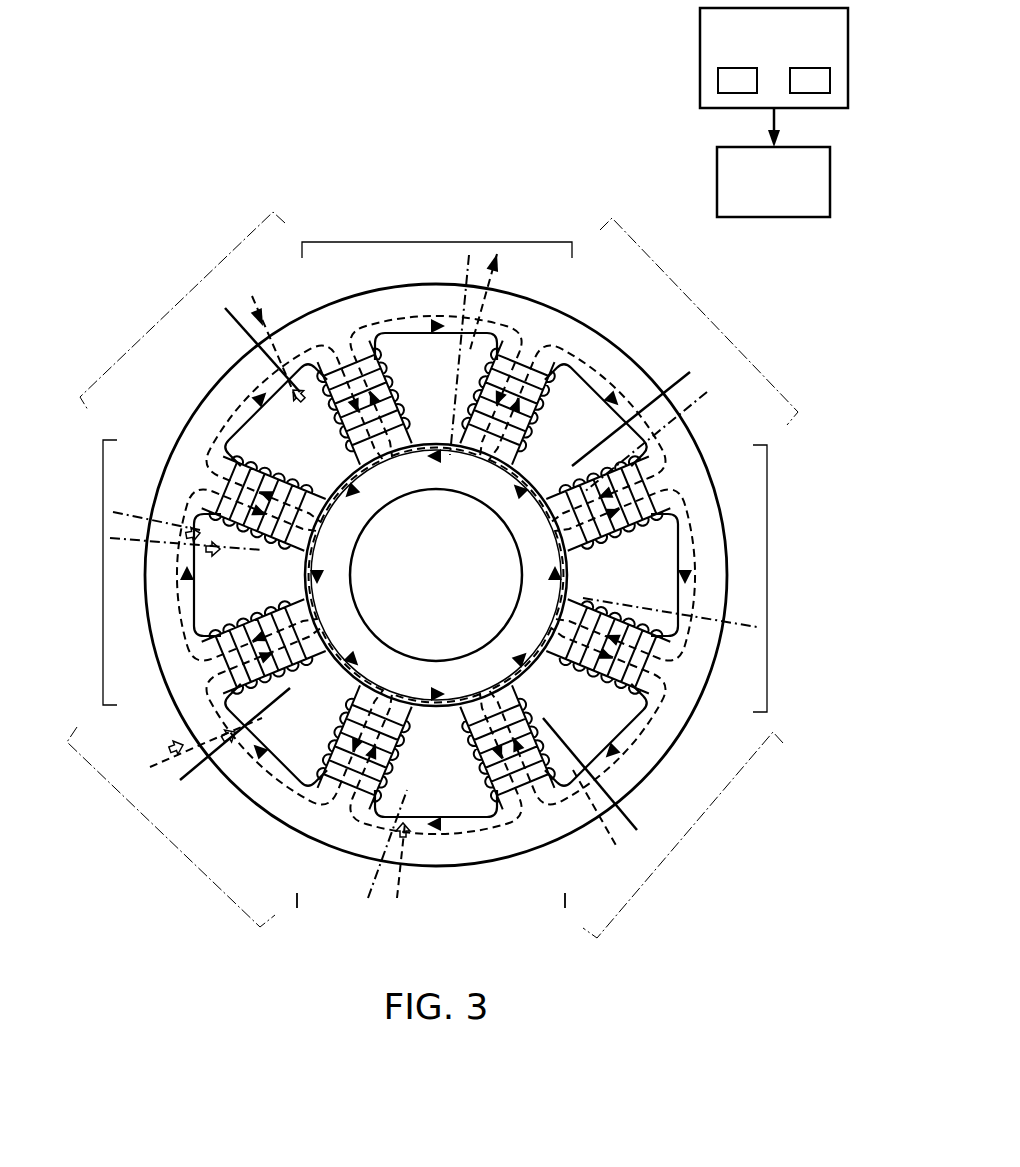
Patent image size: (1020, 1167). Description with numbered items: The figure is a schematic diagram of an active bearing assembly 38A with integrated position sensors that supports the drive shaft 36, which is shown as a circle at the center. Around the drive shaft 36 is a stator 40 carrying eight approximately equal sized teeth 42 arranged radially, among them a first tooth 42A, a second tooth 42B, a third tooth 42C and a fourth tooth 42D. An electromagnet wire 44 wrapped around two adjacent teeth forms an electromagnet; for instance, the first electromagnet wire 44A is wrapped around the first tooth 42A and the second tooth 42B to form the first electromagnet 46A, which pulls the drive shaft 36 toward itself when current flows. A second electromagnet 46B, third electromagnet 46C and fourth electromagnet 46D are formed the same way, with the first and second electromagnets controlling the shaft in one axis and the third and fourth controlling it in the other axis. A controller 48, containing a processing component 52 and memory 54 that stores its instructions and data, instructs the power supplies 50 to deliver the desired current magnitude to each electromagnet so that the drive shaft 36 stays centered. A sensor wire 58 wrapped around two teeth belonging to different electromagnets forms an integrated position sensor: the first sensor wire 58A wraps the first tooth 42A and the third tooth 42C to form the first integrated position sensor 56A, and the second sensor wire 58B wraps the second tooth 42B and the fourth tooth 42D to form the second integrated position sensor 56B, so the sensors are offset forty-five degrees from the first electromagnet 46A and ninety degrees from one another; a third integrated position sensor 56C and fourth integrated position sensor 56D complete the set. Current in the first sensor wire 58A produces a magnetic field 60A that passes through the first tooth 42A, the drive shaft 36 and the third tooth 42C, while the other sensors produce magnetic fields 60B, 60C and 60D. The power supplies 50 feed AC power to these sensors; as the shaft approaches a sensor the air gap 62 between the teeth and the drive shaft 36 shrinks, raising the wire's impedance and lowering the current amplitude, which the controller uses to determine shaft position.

The drive shaft 36 is at (540, 693).
The active bearing assembly 38A is at (178, 178).
The stator 40 is at (218, 377).
The teeth 42 is at (600, 560).
The first tooth 42A is at (270, 600).
The second tooth 42B is at (297, 480).
The third tooth 42C is at (337, 707).
The fourth tooth 42D is at (430, 418).
The electromagnet wire 44 is at (590, 808).
The first electromagnet wire 44A is at (220, 750).
The first electromagnet 46A is at (103, 575).
The second electromagnet 46B is at (767, 578).
The third electromagnet 46C is at (437, 242).
The fourth electromagnet 46D is at (437, 918).
The controller 48 is at (850, 55).
The power supplies 50 is at (832, 180).
The processing component 52 is at (718, 80).
The memory 54 is at (830, 82).
The first integrated position sensor 56A is at (162, 833).
The second integrated position sensor 56B is at (177, 302).
The third integrated position sensor 56C is at (690, 842).
The fourth integrated position sensor 56D is at (707, 317).
The sensor wire 58 is at (725, 600).
The first sensor wire 58A is at (407, 800).
The second sensor wire 58B is at (113, 522).
The magnetic field 60A is at (367, 663).
The magnetic field 60B is at (340, 500).
The magnetic field 60C is at (517, 650).
The magnetic field 60D is at (500, 480).
The air gap 62 is at (566, 473).